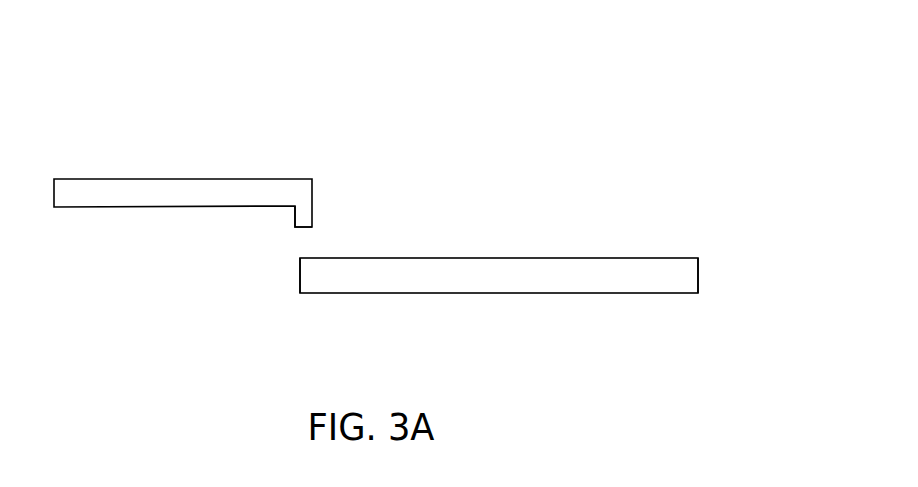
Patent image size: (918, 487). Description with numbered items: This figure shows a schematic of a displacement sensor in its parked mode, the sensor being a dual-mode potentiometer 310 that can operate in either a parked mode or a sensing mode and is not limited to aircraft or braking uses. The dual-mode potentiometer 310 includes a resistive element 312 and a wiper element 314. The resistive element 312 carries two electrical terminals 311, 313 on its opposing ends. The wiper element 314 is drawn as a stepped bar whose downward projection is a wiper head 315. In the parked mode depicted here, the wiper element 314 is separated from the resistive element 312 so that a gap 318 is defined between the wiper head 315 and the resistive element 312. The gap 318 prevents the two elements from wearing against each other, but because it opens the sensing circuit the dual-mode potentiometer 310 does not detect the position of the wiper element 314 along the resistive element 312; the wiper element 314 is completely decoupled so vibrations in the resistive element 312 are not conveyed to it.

The dual-mode potentiometer 310 is at (123, 58).
The electrical terminal 311 is at (300, 286).
The resistive element 312 is at (472, 277).
The electrical terminal 313 is at (698, 279).
The wiper element 314 is at (155, 193).
The wiper head 315 is at (301, 218).
The gap 318 is at (298, 243).